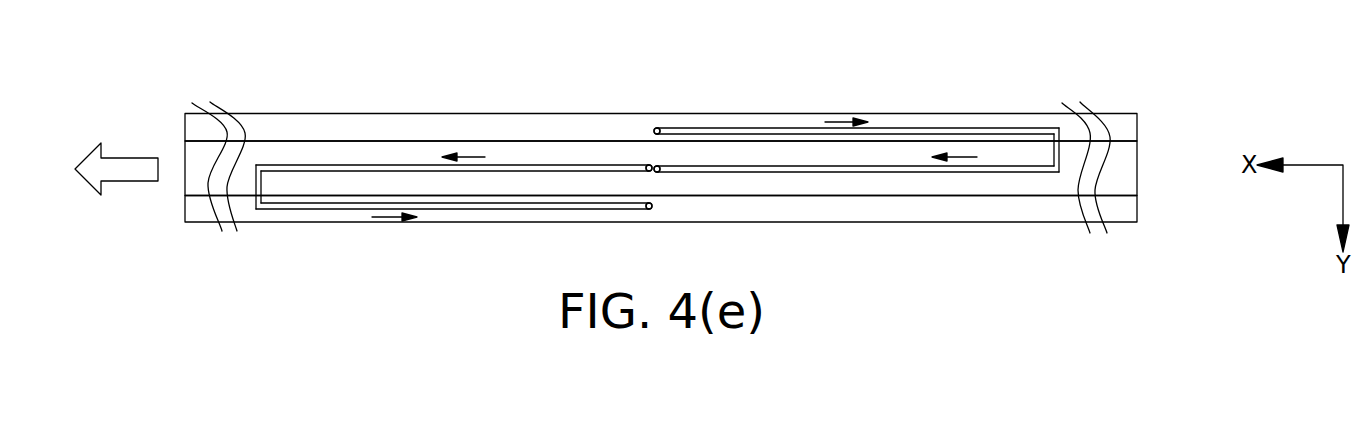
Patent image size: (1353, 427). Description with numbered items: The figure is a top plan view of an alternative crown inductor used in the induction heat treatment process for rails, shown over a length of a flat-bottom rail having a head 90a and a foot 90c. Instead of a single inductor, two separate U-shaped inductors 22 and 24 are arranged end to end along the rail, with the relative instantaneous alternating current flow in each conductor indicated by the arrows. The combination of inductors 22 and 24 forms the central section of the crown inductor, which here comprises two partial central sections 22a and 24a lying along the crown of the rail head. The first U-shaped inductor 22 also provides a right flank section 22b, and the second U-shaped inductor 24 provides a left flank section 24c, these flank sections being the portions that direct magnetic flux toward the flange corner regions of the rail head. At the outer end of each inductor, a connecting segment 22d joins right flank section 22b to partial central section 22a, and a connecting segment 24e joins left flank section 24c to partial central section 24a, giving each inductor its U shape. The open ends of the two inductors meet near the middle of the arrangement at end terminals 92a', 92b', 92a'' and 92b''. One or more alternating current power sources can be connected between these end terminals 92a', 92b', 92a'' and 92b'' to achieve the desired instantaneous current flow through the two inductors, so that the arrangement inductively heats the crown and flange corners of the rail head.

The U-shaped inductor 22 is at (862, 140).
The partial central section 22a is at (900, 170).
The right flank section 22b is at (914, 131).
The connecting segment 22d is at (1058, 150).
The U-shaped inductor 24 is at (463, 191).
The partial central section 24a is at (403, 167).
The left flank section 24c is at (473, 209).
The connecting segment 24e is at (260, 183).
The head 90a is at (1122, 160).
The foot 90c is at (1127, 122).
The end terminal 92a' is at (704, 95).
The end terminal 92a'' is at (651, 114).
The end terminal 92b' is at (730, 214).
The end terminal 92b'' is at (617, 240).